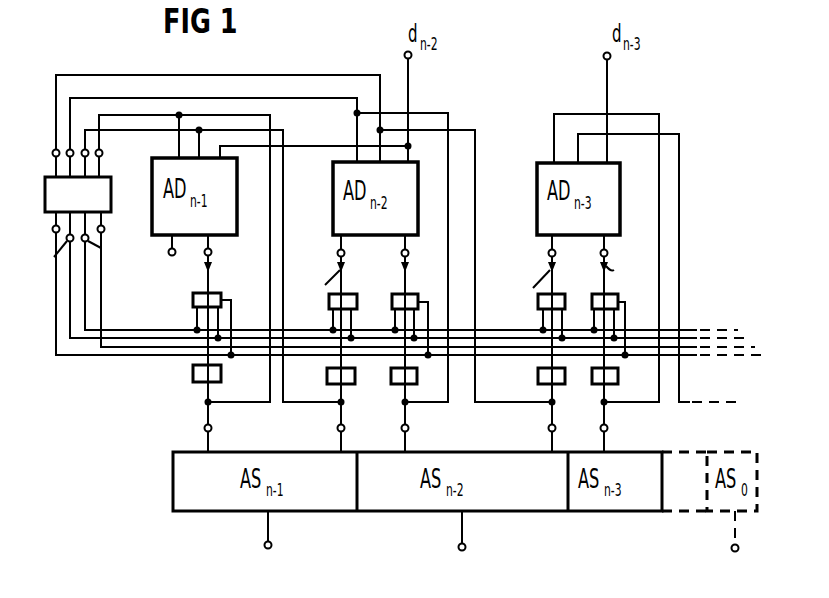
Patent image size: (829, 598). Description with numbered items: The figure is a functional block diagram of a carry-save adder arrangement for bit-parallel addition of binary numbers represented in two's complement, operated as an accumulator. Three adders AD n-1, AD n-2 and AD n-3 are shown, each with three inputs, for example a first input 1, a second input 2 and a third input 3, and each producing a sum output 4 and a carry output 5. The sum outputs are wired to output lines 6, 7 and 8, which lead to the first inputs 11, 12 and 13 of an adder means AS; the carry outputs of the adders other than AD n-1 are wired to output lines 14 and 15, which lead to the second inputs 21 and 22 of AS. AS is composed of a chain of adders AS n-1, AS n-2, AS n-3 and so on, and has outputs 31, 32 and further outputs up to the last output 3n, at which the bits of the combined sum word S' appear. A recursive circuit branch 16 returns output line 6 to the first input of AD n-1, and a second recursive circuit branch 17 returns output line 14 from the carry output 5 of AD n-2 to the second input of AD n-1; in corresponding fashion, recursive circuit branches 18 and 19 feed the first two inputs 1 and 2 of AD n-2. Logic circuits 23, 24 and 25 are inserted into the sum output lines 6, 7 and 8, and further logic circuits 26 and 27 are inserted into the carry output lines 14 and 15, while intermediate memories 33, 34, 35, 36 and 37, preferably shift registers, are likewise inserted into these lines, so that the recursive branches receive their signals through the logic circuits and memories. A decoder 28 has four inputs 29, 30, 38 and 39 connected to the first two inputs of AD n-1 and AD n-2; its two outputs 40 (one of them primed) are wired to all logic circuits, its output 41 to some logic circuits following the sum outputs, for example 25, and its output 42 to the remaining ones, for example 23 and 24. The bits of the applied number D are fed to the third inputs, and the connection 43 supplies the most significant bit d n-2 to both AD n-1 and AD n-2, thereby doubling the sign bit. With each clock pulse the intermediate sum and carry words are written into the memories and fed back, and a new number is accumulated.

The first input 1 is at (395, 255).
The second input 2 is at (459, 261).
The third input 3 is at (412, 147).
The sum output 4 is at (412, 343).
The carry output 5 is at (347, 343).
The output line 6 is at (205, 278).
The output line 7 is at (411, 284).
The output line 8 is at (607, 290).
The first input of adder means AS 11 is at (218, 428).
The first input of adder means AS 12 is at (416, 428).
The first input of adder means AS 13 is at (614, 428).
The output line 14 is at (338, 262).
The output line 15 is at (545, 263).
The recursive circuit branch 16 is at (270, 212).
The second recursive circuit branch 17 is at (284, 212).
The recursive circuit branch 18 is at (448, 184).
The recursive circuit branch 19 is at (475, 202).
The second input of adder means AS 21 is at (330, 428).
The second input of adder means AS 22 is at (539, 428).
The logic circuit 23 is at (193, 303).
The logic circuit 24 is at (393, 304).
The logic circuit 25 is at (598, 294).
The logic circuit 26 is at (330, 305).
The logic circuit 27 is at (565, 302).
The decoder 28 is at (78, 194).
The decoder input 29 is at (116, 153).
The decoder input 30 is at (88, 150).
The output of adder means AS 31 is at (275, 547).
The output of adder means AS 32 is at (467, 547).
The intermediate memory 33 is at (193, 382).
The intermediate memory 34 is at (393, 384).
The intermediate memory 35 is at (618, 376).
The intermediate memory 36 is at (327, 376).
The intermediate memory 37 is at (538, 376).
The decoder input 38 is at (72, 150).
The decoder input 39 is at (53, 156).
The decoder output 40 is at (101, 248).
The decoder output 41 is at (105, 229).
The decoder output 42 is at (52, 231).
The connection 43 is at (324, 142).
The output of adder means AS 3n is at (719, 550).